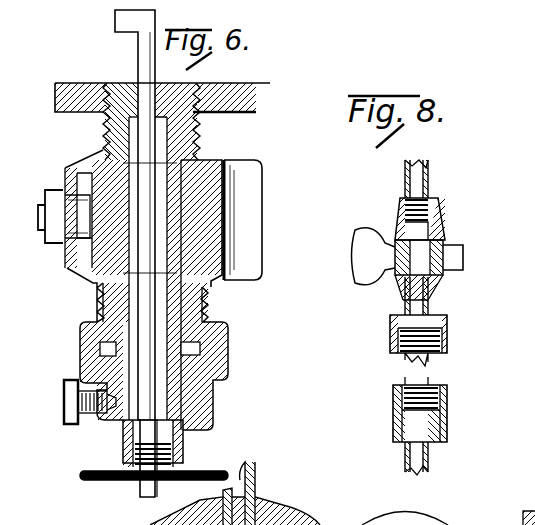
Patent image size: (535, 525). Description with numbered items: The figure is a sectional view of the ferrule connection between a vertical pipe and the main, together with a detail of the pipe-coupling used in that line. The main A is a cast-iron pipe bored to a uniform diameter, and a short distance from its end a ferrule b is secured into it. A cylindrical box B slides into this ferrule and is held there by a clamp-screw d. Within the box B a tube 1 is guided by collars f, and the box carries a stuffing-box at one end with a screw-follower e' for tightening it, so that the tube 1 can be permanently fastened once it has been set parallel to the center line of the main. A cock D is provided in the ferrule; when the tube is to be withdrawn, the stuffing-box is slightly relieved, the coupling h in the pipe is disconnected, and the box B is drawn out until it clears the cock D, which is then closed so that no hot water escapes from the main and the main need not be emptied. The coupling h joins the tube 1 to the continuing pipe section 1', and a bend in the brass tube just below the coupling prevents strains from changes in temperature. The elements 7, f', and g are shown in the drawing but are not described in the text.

In FIG. 6, the main A is at (58, 108).
In FIG. 6, the cylindrical box B is at (193, 123).
In FIG. 6, the cock D is at (240, 219).
In FIG. 6, the ferrule b is at (106, 142).
In FIG. 6, the clamp-screw d is at (66, 396).
In FIG. 6, the collar f is at (148, 258).
In FIG. 6, the lock nut f' is at (168, 443).
In FIG. 6, the screw-follower e' is at (154, 493).
In FIG. 6, the rod 7 is at (138, 50).
In FIG. 8, the tube 1 is at (425, 262).
In FIG. 8, the tube section 1' is at (433, 426).
In FIG. 8, the wing handle g is at (390, 258).
In FIG. 8, the coupling h is at (440, 372).